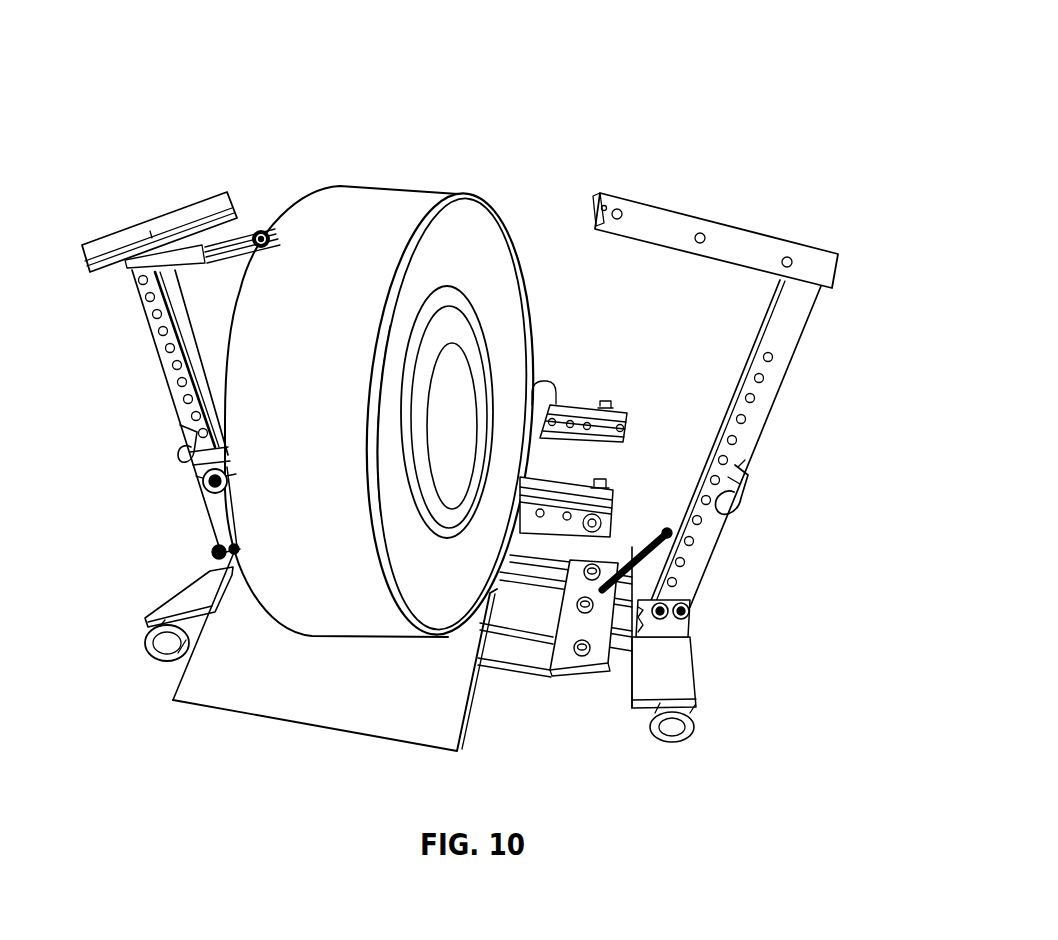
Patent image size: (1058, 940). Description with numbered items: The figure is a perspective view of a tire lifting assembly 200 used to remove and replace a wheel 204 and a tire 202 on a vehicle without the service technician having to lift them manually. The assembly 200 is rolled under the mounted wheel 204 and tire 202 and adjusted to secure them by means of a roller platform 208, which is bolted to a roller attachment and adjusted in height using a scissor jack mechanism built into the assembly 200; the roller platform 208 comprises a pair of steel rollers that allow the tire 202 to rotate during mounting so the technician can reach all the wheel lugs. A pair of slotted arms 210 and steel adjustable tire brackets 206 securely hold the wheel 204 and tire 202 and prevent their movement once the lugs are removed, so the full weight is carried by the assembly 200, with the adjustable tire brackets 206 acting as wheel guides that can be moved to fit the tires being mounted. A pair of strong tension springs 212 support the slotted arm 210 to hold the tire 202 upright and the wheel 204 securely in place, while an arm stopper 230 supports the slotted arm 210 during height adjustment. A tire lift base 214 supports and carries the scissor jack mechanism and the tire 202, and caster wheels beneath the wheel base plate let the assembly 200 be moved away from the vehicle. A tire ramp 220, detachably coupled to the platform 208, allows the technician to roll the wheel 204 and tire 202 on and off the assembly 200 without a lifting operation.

The tire lifting assembly 200 is at (793, 58).
The tire 202 is at (386, 188).
The wheel 204 is at (481, 318).
The adjustable tire bracket 206 is at (205, 192).
The roller platform 208 is at (630, 418).
The slotted arm 210 is at (145, 331).
The tension spring 212 is at (692, 590).
The tire lift base 214 is at (590, 704).
The tire ramp 220 is at (455, 706).
The arm stopper 230 is at (723, 533).